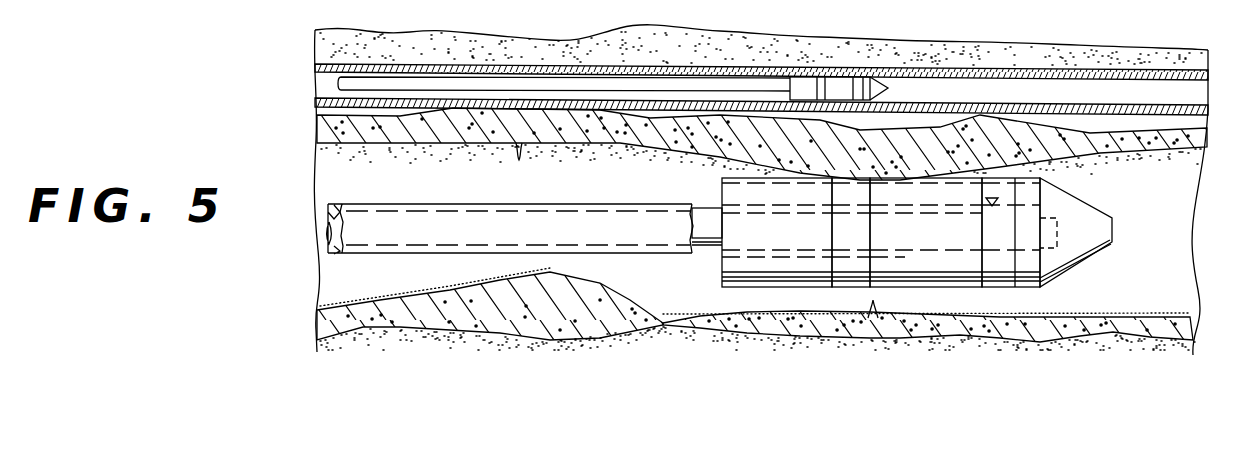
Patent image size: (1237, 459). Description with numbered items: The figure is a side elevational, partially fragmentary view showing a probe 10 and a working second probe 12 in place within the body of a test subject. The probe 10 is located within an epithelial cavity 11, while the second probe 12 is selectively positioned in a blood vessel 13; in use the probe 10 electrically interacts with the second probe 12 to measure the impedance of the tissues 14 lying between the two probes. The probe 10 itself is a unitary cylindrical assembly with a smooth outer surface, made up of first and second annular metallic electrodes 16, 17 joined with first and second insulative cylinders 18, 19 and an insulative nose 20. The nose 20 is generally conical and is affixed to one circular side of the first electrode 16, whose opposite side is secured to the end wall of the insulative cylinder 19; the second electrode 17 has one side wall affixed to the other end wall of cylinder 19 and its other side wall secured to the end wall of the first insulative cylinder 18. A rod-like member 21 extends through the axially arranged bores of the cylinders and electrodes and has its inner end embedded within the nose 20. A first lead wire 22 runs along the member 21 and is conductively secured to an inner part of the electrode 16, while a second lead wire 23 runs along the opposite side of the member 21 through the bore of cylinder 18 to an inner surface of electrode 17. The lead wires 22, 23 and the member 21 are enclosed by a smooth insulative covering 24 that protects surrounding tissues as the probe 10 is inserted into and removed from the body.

The probe 10 is at (1114, 204).
The epithelial cavity 11 is at (357, 173).
The second probe 12 is at (842, 78).
The blood vessel 13 is at (1132, 80).
The tissues 14 is at (930, 128).
The first annular metallic electrode 16 is at (998, 285).
The second annular metallic electrode 17 is at (841, 286).
The first insulative cylinder 18 is at (724, 267).
The second insulative cylinder 19 is at (942, 283).
The insulative nose 20 is at (1103, 250).
The rod-like member 21 is at (703, 218).
The first lead wire 22 is at (332, 203).
The second lead wire 23 is at (330, 249).
The insulative covering 24 is at (441, 221).